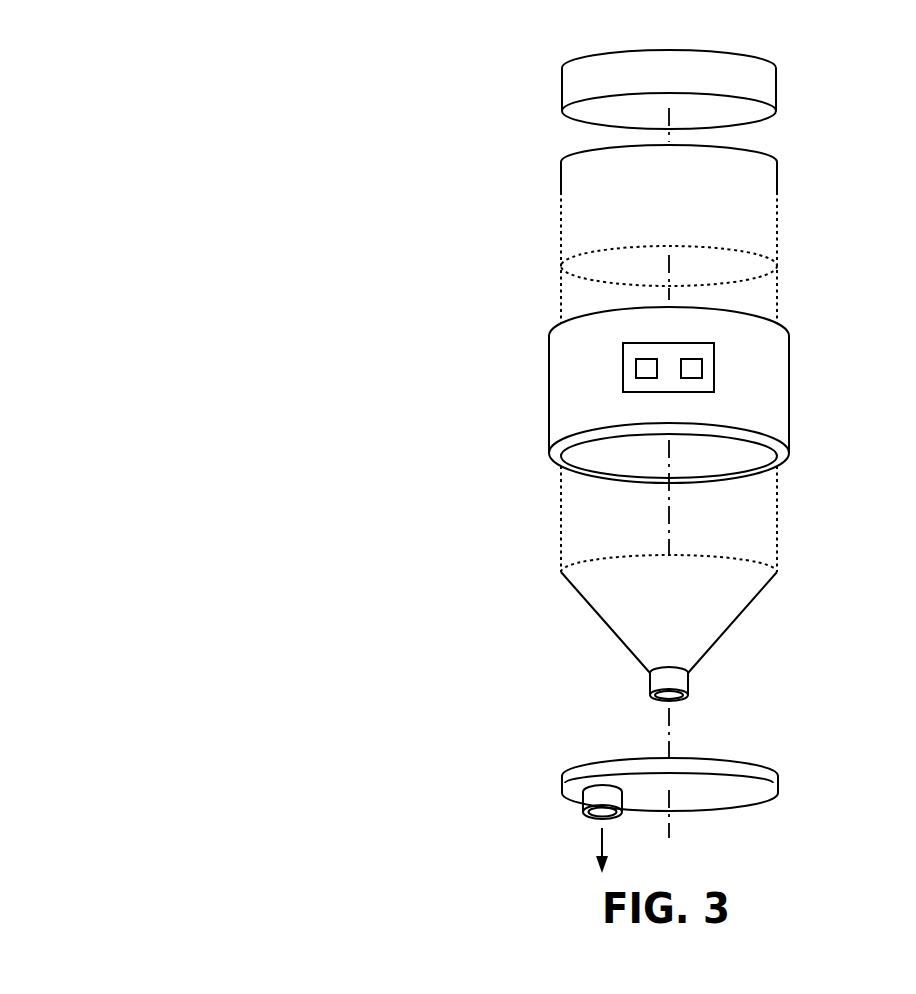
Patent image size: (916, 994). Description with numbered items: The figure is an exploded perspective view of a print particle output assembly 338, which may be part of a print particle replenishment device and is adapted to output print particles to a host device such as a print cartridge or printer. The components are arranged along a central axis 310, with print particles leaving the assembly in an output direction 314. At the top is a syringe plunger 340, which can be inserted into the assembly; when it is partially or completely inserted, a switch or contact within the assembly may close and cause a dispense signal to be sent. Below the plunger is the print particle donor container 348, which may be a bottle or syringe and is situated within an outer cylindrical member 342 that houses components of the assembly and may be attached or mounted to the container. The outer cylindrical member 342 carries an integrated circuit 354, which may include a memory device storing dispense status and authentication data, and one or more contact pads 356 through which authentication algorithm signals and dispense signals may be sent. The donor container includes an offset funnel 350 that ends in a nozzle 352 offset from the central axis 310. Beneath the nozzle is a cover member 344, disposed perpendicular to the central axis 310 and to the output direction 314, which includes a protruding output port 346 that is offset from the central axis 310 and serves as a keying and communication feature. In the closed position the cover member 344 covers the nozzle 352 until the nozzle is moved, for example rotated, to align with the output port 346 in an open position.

The print particle output assembly 338 is at (195, 108).
The syringe plunger 340 is at (562, 96).
The print particle donor container 348 is at (561, 237).
The outer cylindrical member 342 is at (661, 395).
The integrated circuit 354 is at (714, 383).
The contact pads 356 is at (636, 368).
The offset funnel 350 is at (596, 614).
The nozzle 352 is at (650, 686).
The central axis 310 is at (669, 742).
The cover member 344 is at (778, 781).
The output port 346 is at (590, 812).
The output direction 314 is at (606, 851).